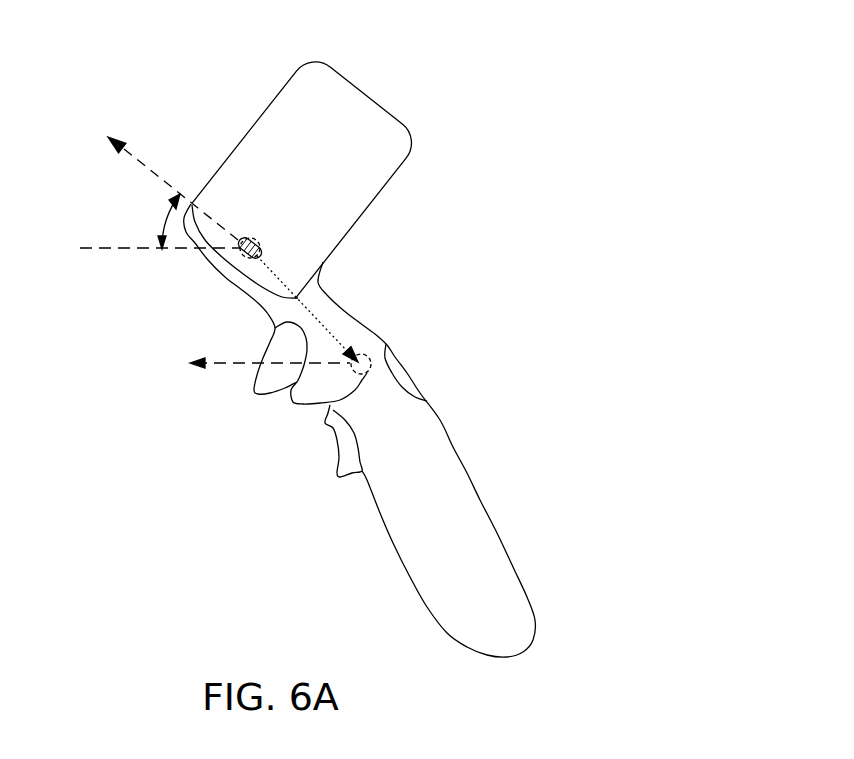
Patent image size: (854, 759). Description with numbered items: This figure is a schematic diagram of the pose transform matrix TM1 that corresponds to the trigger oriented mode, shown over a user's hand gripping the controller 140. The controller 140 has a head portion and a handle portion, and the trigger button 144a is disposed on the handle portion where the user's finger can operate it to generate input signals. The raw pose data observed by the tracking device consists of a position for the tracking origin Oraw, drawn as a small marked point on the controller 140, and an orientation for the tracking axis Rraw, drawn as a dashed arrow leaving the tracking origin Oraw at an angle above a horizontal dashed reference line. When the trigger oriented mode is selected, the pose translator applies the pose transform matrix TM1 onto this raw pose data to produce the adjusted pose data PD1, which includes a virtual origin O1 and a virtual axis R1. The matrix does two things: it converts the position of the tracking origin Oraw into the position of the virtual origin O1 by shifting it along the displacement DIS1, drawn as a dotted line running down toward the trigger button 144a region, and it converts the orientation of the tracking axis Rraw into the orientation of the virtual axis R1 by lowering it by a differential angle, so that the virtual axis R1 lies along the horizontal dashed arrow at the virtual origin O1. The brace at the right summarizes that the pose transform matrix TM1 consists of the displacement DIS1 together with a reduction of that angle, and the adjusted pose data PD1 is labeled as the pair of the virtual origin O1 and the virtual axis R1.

The controller 140 is at (500, 98).
The trigger button 144a is at (268, 347).
The tracking origin Oraw is at (250, 238).
The tracking axis Rraw is at (158, 173).
The virtual axis R1 is at (140, 250).
The displacement DIS1 is at (333, 304).
The virtual origin O1 is at (325, 405).
The adjusted pose data PD1 is at (284, 462).
The pose transform matrix TM1 is at (637, 250).